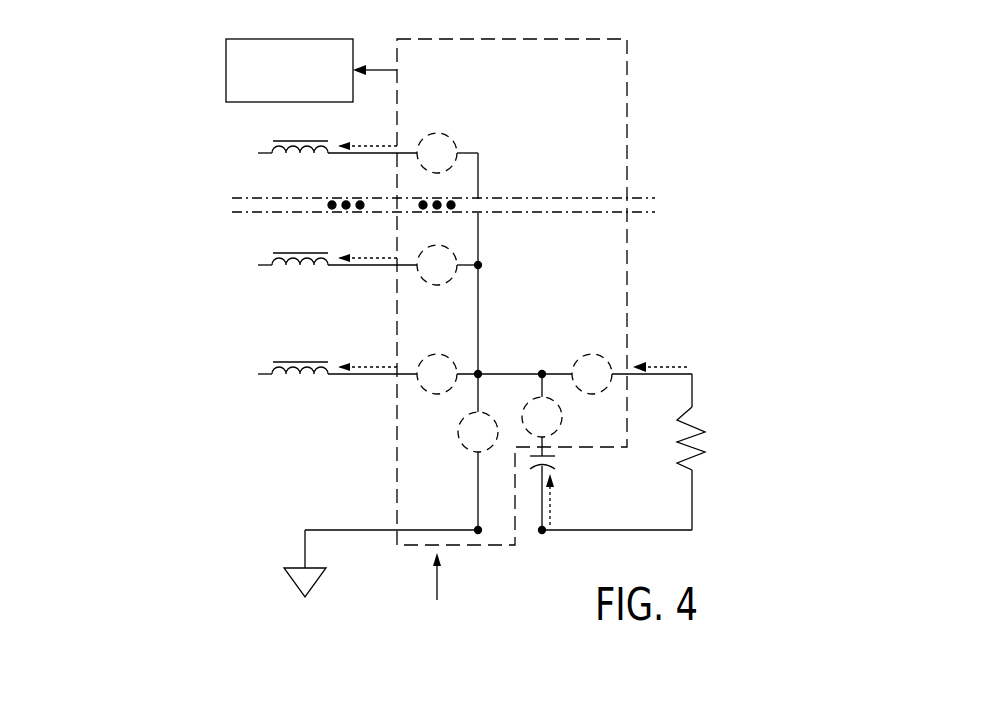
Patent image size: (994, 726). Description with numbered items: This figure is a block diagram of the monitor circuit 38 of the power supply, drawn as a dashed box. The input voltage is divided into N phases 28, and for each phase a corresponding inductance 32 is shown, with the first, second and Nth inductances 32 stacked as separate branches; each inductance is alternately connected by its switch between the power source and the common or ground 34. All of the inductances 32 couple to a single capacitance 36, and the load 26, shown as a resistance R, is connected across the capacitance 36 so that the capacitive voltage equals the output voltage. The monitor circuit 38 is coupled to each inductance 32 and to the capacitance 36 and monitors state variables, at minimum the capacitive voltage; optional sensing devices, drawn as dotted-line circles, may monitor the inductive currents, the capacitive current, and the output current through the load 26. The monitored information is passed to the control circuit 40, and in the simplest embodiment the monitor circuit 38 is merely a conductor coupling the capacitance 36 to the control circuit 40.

The load 26 is at (698, 437).
The phases 28 is at (105, 482).
The inductances 32 is at (283, 152).
The ground 34 is at (303, 568).
The capacitance 36 is at (553, 468).
The monitor circuit 38 is at (561, 126).
The control circuit 40 is at (270, 39).